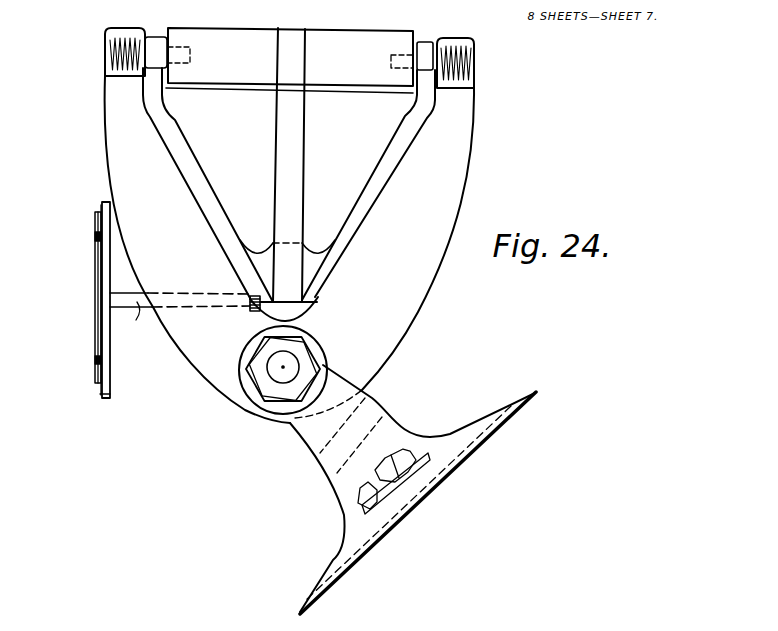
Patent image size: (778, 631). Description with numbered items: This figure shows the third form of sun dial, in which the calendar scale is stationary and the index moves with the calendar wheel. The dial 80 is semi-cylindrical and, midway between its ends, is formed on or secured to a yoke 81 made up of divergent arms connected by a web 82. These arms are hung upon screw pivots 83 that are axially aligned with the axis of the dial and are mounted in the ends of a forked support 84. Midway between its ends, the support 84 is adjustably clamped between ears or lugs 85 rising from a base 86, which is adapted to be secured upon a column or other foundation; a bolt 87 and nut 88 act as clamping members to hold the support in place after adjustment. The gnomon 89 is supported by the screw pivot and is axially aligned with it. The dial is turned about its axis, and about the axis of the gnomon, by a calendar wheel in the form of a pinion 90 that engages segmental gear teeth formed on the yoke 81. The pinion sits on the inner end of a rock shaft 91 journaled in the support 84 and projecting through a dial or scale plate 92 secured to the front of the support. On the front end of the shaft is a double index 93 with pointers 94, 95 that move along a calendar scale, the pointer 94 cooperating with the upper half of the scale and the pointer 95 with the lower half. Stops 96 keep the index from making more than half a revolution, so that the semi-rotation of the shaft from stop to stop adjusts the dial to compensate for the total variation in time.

The dial 80 is at (297, 146).
The yoke 81 is at (206, 192).
The web 82 is at (358, 228).
The screw pivots 83 is at (107, 64).
The forked support 84 is at (468, 180).
The ears or lugs 85 is at (320, 438).
The base 86 is at (449, 447).
The bolt 87 is at (285, 367).
The nut 88 is at (275, 390).
The gnomon 89 is at (248, 40).
The pinion 90 is at (255, 315).
The rock shaft 91 is at (180, 323).
The scale plate 92 is at (100, 397).
The double index 93 is at (92, 297).
The pointer 94 is at (97, 343).
The pointer 95 is at (96, 281).
The stops 96 is at (96, 236).